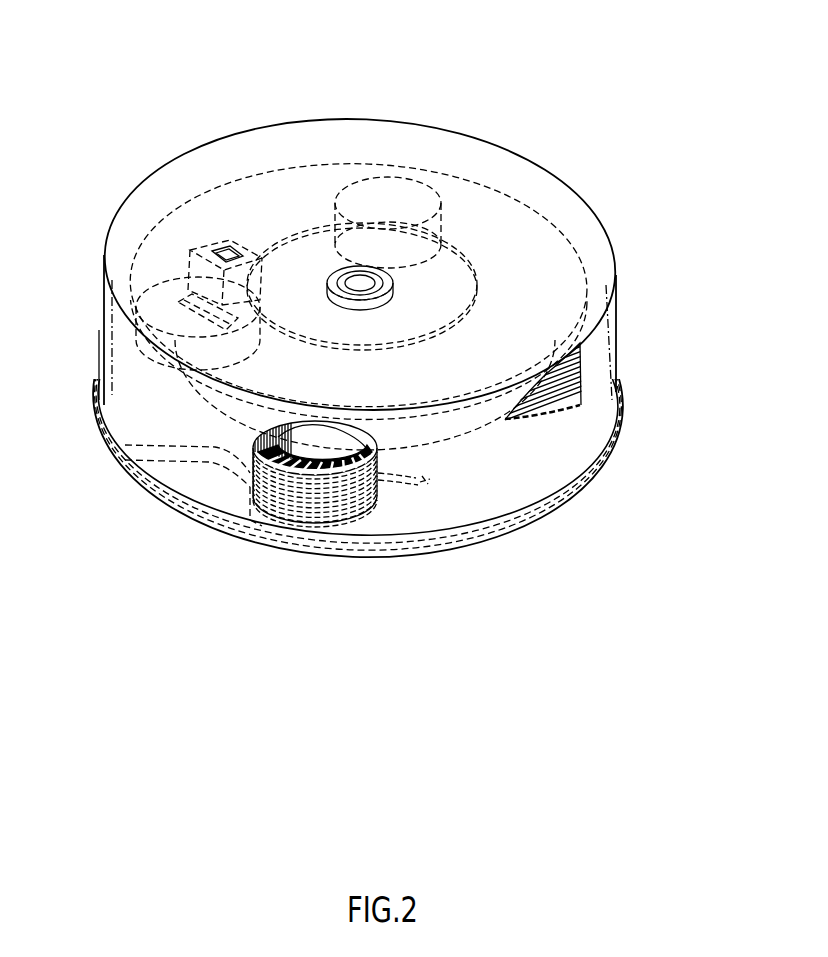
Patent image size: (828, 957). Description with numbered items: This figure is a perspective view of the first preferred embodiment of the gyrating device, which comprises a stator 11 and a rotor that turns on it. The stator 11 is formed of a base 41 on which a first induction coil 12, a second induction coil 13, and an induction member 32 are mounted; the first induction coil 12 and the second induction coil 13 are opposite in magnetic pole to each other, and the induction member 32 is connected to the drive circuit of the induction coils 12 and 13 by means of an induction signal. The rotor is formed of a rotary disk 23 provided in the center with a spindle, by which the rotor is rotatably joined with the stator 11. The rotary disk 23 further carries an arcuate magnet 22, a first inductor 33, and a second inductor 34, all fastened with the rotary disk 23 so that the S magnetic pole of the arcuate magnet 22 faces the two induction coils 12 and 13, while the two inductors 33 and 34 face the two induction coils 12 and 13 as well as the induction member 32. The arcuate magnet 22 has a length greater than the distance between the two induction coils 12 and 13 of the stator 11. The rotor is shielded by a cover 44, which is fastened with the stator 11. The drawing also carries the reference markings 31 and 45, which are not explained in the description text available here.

The stator 11 is at (672, 433).
The first induction coil 12 is at (582, 352).
The second induction coil 13 is at (295, 505).
The arcuate magnet 22 is at (485, 412).
The rotary disk 23 is at (523, 218).
The actuator 31 is at (133, 220).
The induction member 32 is at (225, 253).
The first inductor 33 is at (175, 300).
The second inductor 34 is at (393, 190).
The base 41 is at (487, 497).
The cover 44 is at (283, 118).
The flexible cable 45 is at (200, 487).